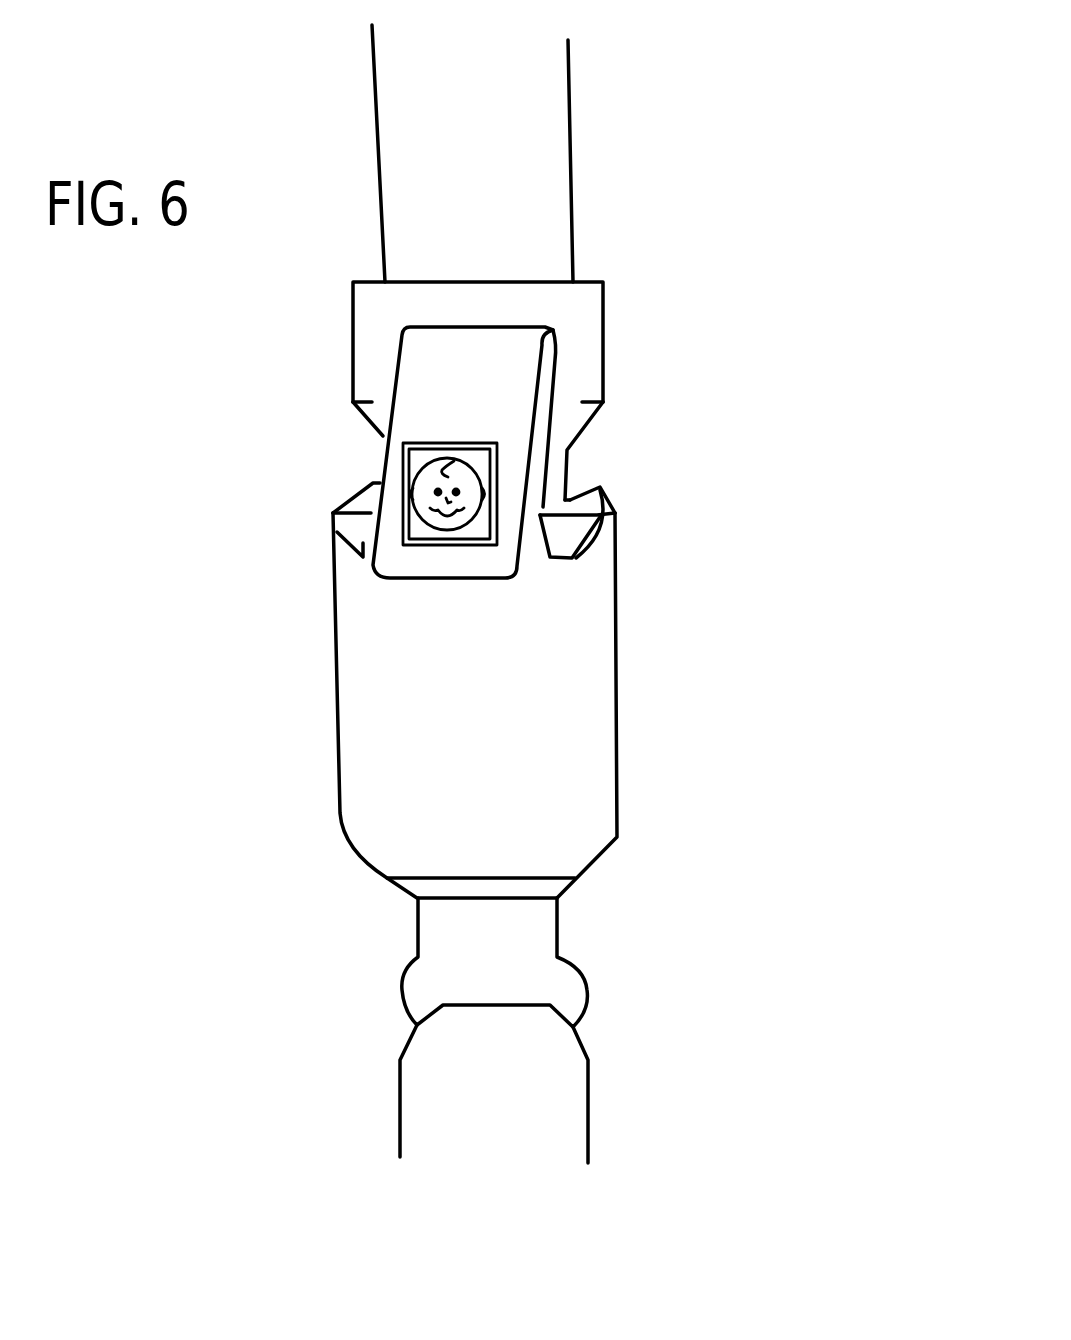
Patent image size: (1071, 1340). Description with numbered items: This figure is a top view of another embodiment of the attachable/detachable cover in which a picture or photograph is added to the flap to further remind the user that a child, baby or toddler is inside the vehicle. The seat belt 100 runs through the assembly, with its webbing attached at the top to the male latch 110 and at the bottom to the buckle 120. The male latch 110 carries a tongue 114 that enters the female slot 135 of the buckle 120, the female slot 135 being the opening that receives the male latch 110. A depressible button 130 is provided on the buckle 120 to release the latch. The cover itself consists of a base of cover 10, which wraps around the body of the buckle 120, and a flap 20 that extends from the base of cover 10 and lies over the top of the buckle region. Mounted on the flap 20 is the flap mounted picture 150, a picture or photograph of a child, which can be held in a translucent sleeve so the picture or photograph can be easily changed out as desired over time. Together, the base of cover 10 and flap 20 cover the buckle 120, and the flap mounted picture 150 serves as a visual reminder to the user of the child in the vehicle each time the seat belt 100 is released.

The base of cover 10 is at (393, 775).
The flap 20 is at (457, 370).
The seat belt 100 is at (552, 110).
The male latch 110 is at (578, 318).
The tongue 114 is at (575, 413).
The buckle 120 is at (550, 888).
The depressible button 130 is at (567, 532).
The female slot for receiving male latch 135 is at (567, 500).
The flap mounted picture 150 is at (415, 465).